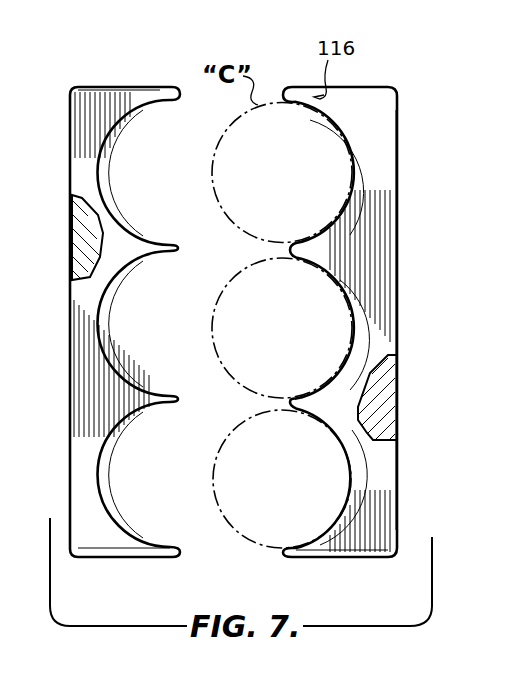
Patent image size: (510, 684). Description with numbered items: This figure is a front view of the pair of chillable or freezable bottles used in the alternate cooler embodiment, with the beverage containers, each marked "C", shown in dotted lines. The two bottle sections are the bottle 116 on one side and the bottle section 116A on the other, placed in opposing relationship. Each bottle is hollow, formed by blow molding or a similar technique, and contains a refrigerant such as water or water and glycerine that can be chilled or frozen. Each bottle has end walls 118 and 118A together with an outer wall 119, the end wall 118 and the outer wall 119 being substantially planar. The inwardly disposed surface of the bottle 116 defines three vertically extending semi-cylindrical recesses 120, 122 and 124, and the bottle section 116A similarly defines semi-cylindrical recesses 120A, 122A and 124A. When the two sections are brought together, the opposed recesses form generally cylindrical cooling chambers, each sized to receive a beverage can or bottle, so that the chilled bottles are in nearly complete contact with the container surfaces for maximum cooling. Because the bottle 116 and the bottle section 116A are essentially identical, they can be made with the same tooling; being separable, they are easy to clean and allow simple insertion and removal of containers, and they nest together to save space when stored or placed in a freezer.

The chillable bottle 116 is at (100, 97).
The chillable bottle section 116A is at (104, 102).
The end wall 118 is at (372, 87).
The end wall 118A is at (370, 560).
The outer wall 119 is at (398, 320).
The semi-cylindrical recess 120 is at (357, 471).
The semi-cylindrical recess 122 is at (353, 317).
The semi-cylindrical recess 124 is at (354, 158).
The semi-cylindrical recess 120A is at (112, 483).
The semi-cylindrical recess 122A is at (112, 327).
The semi-cylindrical recess 124A is at (112, 167).